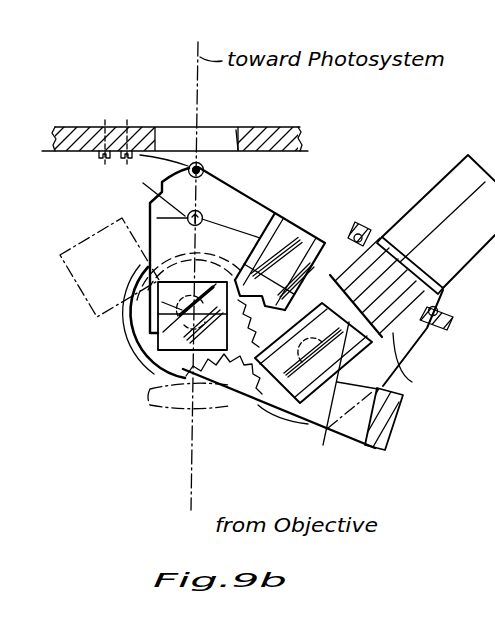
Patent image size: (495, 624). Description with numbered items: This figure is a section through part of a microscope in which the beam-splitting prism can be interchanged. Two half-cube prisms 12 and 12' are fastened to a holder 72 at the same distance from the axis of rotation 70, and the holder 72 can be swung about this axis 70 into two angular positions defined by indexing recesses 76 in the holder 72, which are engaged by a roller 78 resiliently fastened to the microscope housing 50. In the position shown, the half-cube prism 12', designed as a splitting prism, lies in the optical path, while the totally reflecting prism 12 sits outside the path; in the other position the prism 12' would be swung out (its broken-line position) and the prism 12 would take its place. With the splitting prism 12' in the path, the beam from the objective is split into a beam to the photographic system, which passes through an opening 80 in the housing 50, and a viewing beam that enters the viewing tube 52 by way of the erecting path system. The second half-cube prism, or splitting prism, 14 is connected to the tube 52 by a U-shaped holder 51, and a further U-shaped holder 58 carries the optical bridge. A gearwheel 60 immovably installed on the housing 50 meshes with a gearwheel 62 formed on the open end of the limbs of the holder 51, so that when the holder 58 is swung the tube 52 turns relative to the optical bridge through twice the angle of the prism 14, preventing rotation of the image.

The microscope housing 50 is at (82, 135).
The opening 80 is at (238, 137).
The roller 78 is at (204, 169).
The indexing recesses 76 is at (158, 181).
The axis of rotation 70 is at (148, 204).
The holder 72 is at (243, 213).
The half-cube prism 12 is at (291, 253).
The half-cube prism 12' is at (150, 317).
The gearwheel 60 is at (170, 368).
The gearwheel 62 is at (245, 388).
The splitting prism 14 is at (325, 428).
The U-shaped holder 51 is at (397, 347).
The viewing tube 52 is at (447, 222).
The U-shaped holder 58 is at (400, 428).